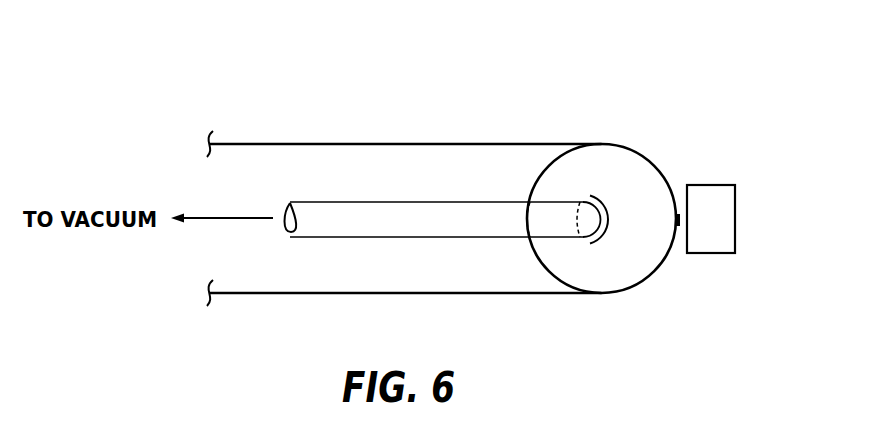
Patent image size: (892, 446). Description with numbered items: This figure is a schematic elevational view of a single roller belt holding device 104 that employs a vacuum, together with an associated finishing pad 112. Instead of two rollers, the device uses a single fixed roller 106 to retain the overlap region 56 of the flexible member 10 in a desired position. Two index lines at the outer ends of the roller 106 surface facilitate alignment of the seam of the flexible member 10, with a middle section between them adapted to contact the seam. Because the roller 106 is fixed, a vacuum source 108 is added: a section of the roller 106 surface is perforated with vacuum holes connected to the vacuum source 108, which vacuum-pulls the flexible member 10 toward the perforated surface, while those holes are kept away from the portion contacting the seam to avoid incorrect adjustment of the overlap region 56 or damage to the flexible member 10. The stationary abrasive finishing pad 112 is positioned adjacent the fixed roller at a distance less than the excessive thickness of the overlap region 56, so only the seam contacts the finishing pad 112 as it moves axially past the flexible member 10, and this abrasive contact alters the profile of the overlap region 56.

The single roller belt holding device 104 is at (512, 66).
The flexible member 10 is at (378, 143).
The single fixed roller 106 is at (600, 273).
The vacuum source 108 is at (430, 202).
The overlap region 56 is at (677, 212).
The abrasive finishing pad 112 is at (710, 184).